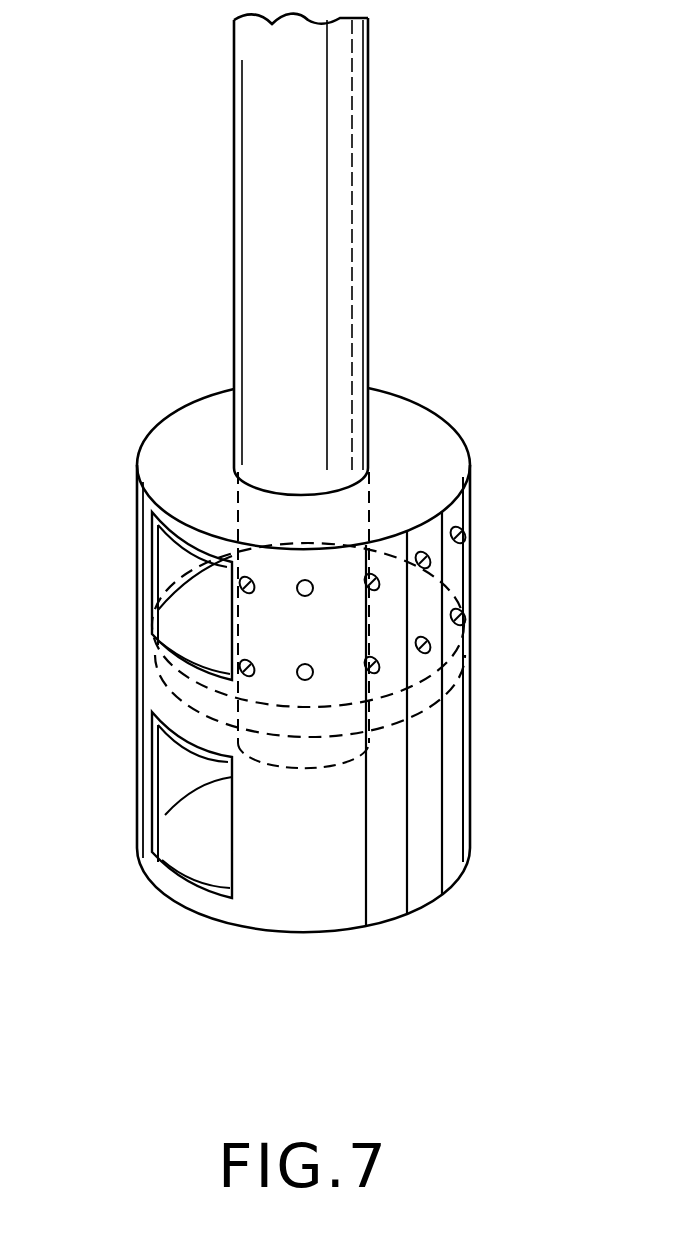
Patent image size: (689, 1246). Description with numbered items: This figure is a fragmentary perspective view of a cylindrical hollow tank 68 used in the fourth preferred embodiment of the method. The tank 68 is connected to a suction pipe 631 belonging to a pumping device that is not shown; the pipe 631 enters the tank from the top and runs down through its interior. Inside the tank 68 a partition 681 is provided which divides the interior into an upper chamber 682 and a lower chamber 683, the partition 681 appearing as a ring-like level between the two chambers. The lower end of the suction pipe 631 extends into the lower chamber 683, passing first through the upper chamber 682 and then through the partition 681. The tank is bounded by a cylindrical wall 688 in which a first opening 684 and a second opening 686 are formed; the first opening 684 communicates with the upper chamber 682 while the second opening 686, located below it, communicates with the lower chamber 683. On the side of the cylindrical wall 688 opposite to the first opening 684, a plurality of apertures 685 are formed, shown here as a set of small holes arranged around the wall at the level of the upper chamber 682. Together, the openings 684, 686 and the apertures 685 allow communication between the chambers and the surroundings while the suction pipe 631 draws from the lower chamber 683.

The suction pipe 631 is at (370, 236).
The cylindrical hollow tank 68 is at (440, 425).
The cylindrical wall 688 is at (432, 802).
The lower chamber 683 is at (450, 757).
The upper chamber 682 is at (447, 580).
The partition 681 is at (450, 680).
The apertures 685 is at (470, 535).
The first opening 684 is at (175, 567).
The second opening 686 is at (180, 775).